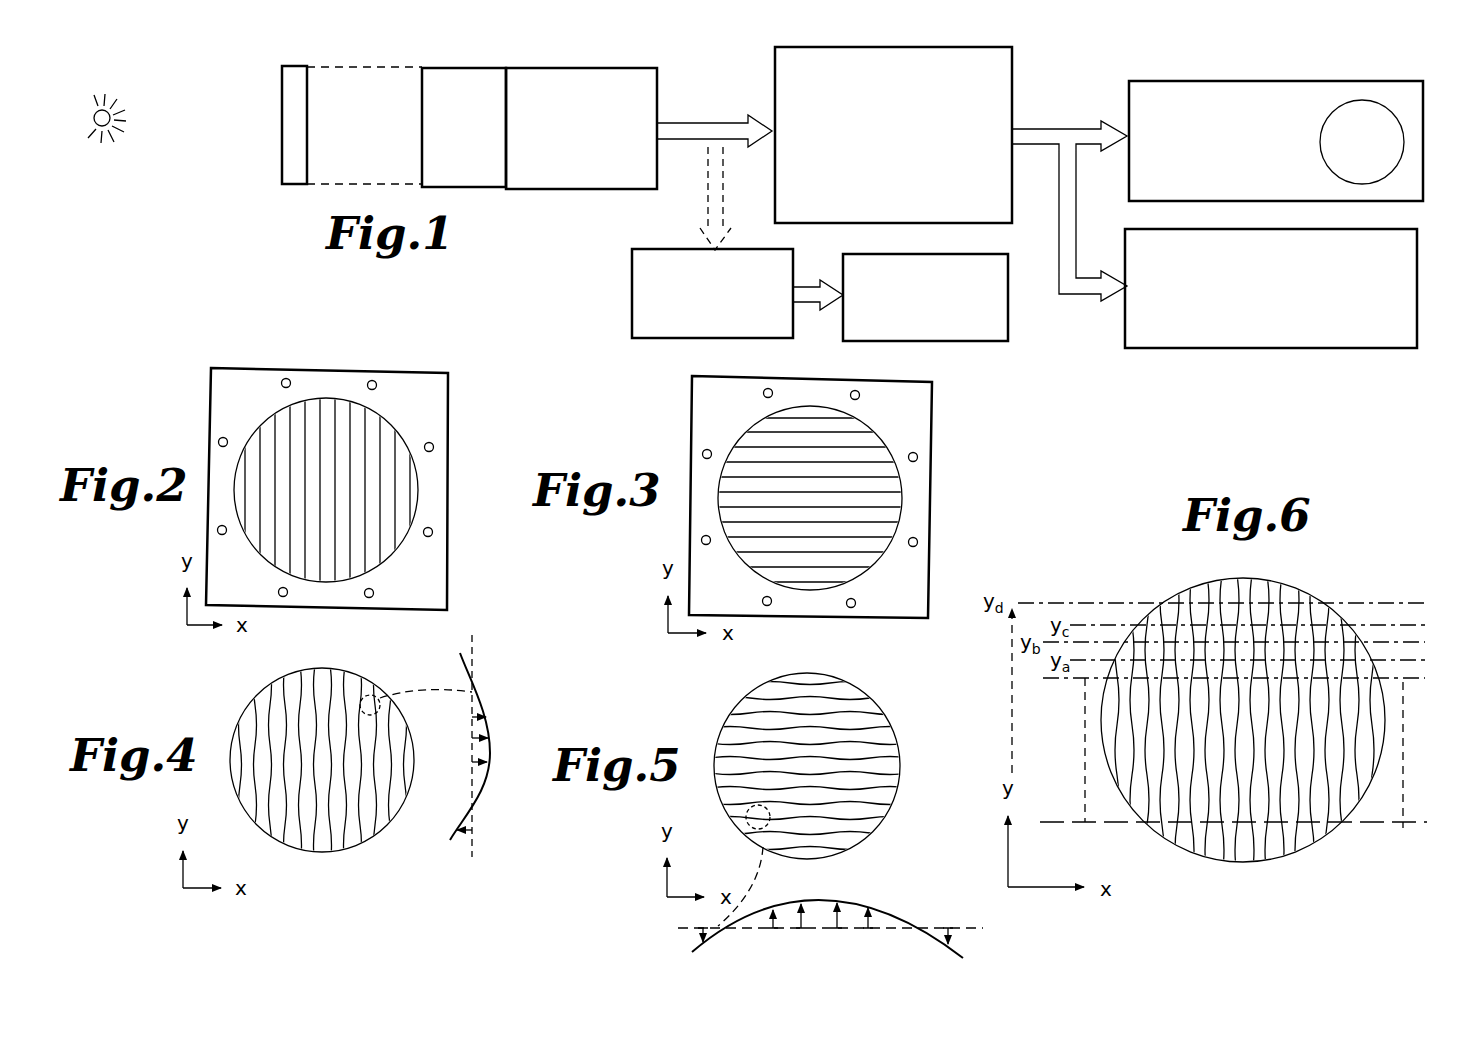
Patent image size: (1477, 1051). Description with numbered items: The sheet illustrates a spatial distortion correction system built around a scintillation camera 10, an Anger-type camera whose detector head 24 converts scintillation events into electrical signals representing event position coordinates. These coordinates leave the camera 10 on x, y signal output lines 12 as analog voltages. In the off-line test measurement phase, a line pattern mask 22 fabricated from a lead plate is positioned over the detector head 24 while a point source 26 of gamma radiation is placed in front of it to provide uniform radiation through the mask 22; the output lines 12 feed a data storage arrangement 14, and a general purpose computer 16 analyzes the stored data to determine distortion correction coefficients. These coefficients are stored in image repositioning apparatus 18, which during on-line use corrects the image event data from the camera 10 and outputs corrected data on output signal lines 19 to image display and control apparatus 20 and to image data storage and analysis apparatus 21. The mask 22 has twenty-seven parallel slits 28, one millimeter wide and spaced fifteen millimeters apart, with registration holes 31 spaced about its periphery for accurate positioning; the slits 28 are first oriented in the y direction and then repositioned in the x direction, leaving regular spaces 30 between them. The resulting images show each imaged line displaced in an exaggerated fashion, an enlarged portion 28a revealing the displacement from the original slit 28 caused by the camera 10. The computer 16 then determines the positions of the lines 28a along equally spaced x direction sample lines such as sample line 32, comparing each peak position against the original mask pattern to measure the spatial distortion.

In FIG. 1, the scintillation camera 10 is at (570, 68).
In FIG. 1, the x, y signal output lines 12 is at (695, 122).
In FIG. 1, the data storage arrangement 14 is at (628, 288).
In FIG. 1, the general purpose computer 16 is at (1010, 299).
In FIG. 1, the image repositioning apparatus 18 is at (890, 47).
In FIG. 1, the output signal lines 19 is at (1059, 130).
In FIG. 1, the image display and control apparatus 20 is at (1265, 82).
In FIG. 1, the image data storage and/or analysis apparatus 21 is at (1283, 350).
In FIG. 1, the line pattern mask 22 is at (293, 66).
In FIG. 2, the line pattern mask 22 is at (206, 406).
In FIG. 3, the line pattern mask 22 is at (936, 399).
In FIG. 1, the detector head 24 is at (465, 68).
In FIG. 1, the point source 26 is at (95, 112).
In FIG. 2, the parallel slits 28 is at (337, 413).
In FIG. 3, the parallel slits 28 is at (868, 446).
In FIG. 4, the parallel slits 28 is at (474, 656).
In FIG. 5, the parallel slits 28 is at (965, 927).
In FIG. 4, the enlarged portion of image line 28a is at (322, 668).
In FIG. 5, the enlarged portion of image line 28a is at (868, 716).
In FIG. 6, the enlarged portion of image line 28a is at (1218, 590).
In FIG. 2, the spaces between lines 30 is at (387, 430).
In FIG. 3, the spaces between lines 30 is at (752, 437).
In FIG. 2, the registration holes 31 is at (285, 379).
In FIG. 3, the registration holes 31 is at (853, 392).
In FIG. 6, the x direction sample line 32 is at (1388, 607).